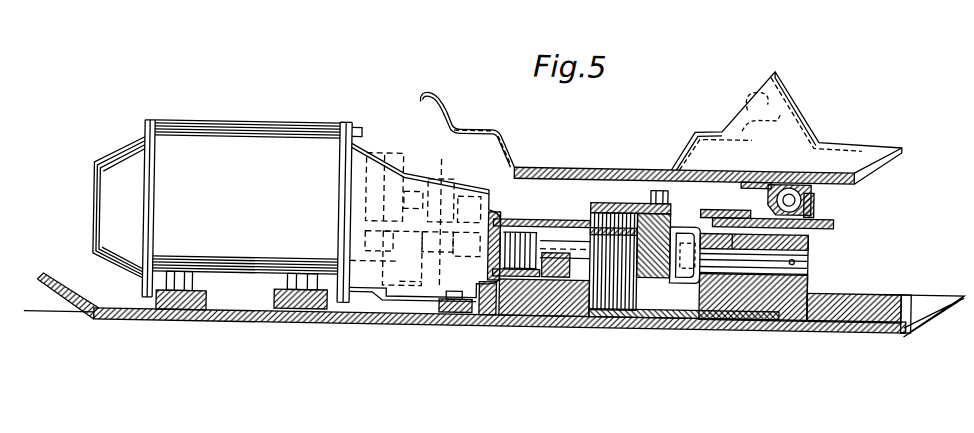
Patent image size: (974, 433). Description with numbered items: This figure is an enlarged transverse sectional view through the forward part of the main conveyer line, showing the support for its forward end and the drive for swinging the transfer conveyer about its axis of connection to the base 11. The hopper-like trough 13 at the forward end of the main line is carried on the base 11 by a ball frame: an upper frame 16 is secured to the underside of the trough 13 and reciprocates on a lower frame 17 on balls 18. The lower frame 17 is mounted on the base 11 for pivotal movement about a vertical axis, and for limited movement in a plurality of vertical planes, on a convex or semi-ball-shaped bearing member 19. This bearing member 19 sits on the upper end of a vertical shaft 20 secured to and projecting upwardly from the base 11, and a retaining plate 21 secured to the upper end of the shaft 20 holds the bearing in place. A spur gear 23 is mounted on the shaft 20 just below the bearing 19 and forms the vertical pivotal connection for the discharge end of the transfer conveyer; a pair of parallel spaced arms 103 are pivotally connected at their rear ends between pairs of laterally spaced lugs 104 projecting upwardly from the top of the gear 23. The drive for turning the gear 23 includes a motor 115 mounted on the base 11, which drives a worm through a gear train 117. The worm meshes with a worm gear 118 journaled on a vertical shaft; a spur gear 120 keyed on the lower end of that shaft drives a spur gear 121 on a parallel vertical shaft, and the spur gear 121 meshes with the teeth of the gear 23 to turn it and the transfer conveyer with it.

The base 11 is at (958, 300).
The hopper-like trough 13 is at (803, 131).
The upper frame 16 is at (767, 195).
The lower frame 17 is at (813, 203).
The balls 18 is at (818, 174).
The bearing member 19 is at (643, 245).
The vertical shaft 20 is at (623, 202).
The retaining plate 21 is at (604, 234).
The spur gear 23 is at (853, 293).
The arms 103 is at (735, 240).
The lugs 104 is at (802, 290).
The motor 115 is at (306, 124).
The gear train 117 is at (413, 188).
The worm gear 118 is at (518, 223).
The spur gear 120 is at (693, 318).
The spur gear 121 is at (500, 325).